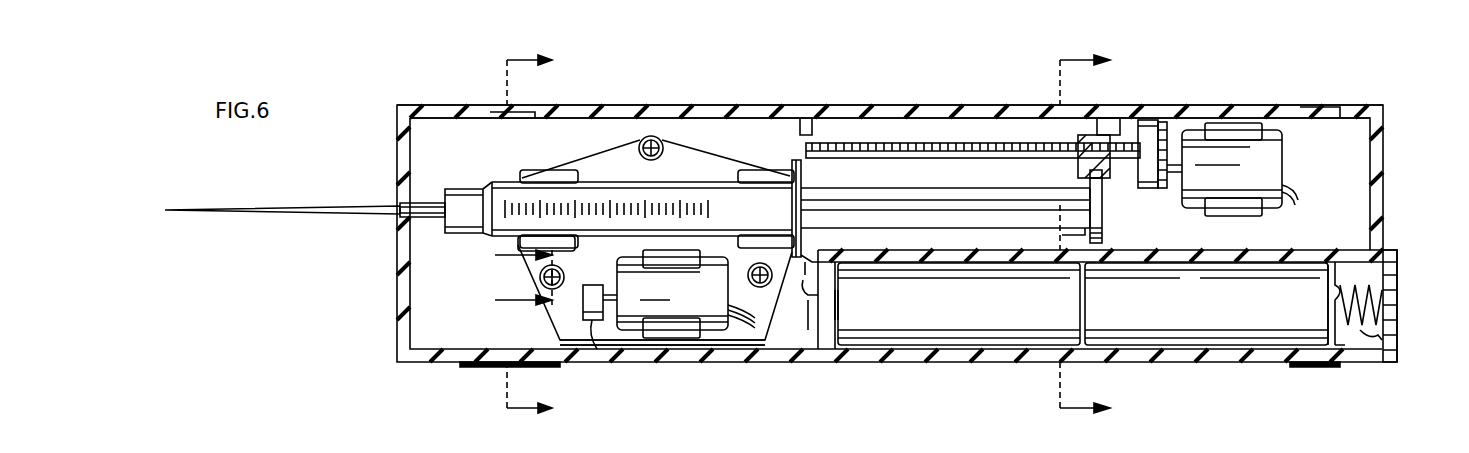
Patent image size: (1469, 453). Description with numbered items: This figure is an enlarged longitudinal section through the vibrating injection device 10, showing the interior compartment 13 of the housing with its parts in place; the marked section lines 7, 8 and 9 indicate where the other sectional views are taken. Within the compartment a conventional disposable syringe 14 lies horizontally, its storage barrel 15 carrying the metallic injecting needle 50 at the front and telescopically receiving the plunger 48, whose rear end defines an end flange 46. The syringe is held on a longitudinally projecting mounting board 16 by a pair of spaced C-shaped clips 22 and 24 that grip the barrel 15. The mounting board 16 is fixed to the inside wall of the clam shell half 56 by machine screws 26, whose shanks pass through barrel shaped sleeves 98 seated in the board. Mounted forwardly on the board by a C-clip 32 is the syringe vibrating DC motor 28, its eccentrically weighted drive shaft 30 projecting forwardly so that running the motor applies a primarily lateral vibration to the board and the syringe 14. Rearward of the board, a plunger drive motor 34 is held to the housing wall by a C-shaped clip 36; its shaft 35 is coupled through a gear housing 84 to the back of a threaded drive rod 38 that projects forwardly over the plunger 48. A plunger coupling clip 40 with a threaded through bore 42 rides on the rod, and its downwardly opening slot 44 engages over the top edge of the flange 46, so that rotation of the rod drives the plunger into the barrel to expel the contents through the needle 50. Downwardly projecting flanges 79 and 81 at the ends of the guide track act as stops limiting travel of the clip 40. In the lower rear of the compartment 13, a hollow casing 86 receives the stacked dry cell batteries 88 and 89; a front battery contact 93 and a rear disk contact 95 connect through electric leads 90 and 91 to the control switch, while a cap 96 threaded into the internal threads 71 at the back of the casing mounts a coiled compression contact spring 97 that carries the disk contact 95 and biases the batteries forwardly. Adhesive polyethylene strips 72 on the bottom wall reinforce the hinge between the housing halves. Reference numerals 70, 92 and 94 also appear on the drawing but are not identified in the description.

The vibrating injection device 10 is at (1348, 65).
The interior compartment 13 is at (896, 233).
The disposable syringe 14 is at (453, 170).
The storage barrel 15 is at (603, 182).
The mounting board 16 is at (732, 160).
The C-shaped clip 22 is at (535, 170).
The C-shaped clip 24 is at (765, 170).
The machine screws 26 is at (651, 136).
The syringe vibrating DC motor 28 is at (718, 345).
The eccentrically weighted drive shaft 30 is at (596, 362).
The C-clip 32 is at (660, 338).
The plunger drive motor 34 is at (1285, 148).
The shaft 35 is at (1170, 168).
The C-shaped clip 36 is at (1250, 130).
The threaded drive rod 38 is at (883, 143).
The plunger coupling clip 40 is at (1106, 118).
The threaded through bore 42 is at (1078, 145).
The downwardly opening slot 44 is at (1102, 178).
The end flange 46 is at (1102, 222).
The plunger 48 is at (966, 190).
The injecting needle 50 is at (265, 205).
The clam shell half 56 is at (885, 105).
The front wall 70 is at (400, 237).
The internal threads 71 is at (1390, 360).
The adhesive strips of polyethylene 72 is at (475, 368).
The downwardly projecting flange 79 is at (805, 118).
The downwardly projecting flange 81 is at (1148, 120).
The gear housing 84 is at (1165, 122).
The hollow casing 86 is at (1290, 250).
The dry cell battery 88 is at (972, 345).
The dry cell battery 89 is at (1237, 345).
The electric lead 90 is at (808, 300).
The electric lead 91 is at (808, 262).
The wires 92 is at (755, 330).
The battery contact 93 is at (840, 293).
The motor wires 94 is at (1300, 195).
The disk contact 95 is at (1340, 258).
The cap 96 is at (1385, 312).
The coiled battery compression contact spring 97 is at (1385, 275).
The barrel shaped sleeves 98 is at (664, 152).
The section line 7- 7 is at (542, 237).
The section line 8- 8 is at (1107, 237).
The section line 9- 9 is at (508, 280).